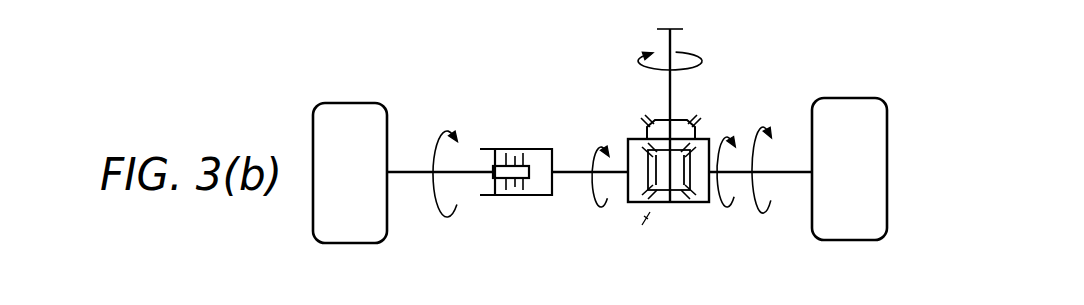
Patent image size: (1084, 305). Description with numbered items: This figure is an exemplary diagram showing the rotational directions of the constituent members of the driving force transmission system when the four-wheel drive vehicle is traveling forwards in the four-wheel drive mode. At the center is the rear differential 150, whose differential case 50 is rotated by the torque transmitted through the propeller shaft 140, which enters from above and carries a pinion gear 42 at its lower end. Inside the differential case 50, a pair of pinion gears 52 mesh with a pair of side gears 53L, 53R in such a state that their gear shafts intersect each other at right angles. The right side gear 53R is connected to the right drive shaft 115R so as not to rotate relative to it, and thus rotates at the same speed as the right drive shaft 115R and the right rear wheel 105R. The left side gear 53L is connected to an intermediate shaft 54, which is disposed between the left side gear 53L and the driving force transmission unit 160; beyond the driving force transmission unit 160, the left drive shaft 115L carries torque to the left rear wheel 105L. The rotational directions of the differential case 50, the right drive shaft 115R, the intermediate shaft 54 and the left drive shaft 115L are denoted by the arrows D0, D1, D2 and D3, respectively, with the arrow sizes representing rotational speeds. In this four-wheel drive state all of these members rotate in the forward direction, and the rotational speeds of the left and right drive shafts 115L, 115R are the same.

The left rear wheel 105L is at (340, 103).
The right rear wheel 105R is at (848, 98).
The left drive shaft 115L is at (402, 171).
The right drive shaft 115R is at (777, 170).
The driving force transmission unit 160 is at (505, 137).
The intermediate shaft 54 is at (562, 172).
The left side gear 53L is at (643, 160).
The right side gear 53R is at (688, 153).
The propeller shaft 140 is at (673, 47).
The drive pinion gear 42 is at (680, 107).
The differential case 50 is at (637, 203).
The pinion gears 52 is at (671, 195).
The rear differential 150 is at (676, 177).
The arrow D3 is at (447, 217).
The arrow D2 is at (601, 207).
The arrow D0 is at (732, 207).
The arrow D1 is at (766, 213).